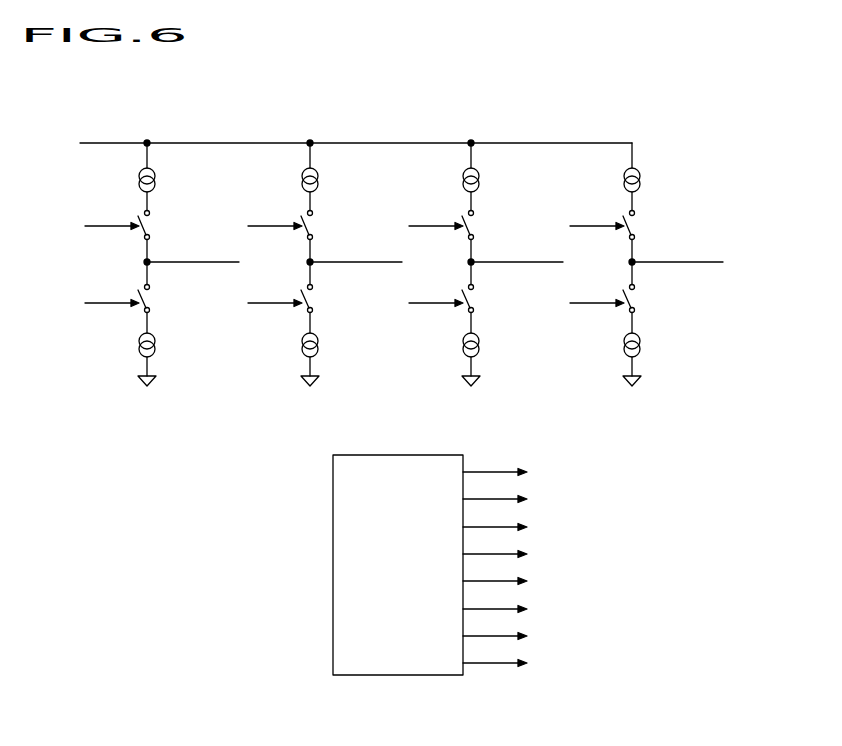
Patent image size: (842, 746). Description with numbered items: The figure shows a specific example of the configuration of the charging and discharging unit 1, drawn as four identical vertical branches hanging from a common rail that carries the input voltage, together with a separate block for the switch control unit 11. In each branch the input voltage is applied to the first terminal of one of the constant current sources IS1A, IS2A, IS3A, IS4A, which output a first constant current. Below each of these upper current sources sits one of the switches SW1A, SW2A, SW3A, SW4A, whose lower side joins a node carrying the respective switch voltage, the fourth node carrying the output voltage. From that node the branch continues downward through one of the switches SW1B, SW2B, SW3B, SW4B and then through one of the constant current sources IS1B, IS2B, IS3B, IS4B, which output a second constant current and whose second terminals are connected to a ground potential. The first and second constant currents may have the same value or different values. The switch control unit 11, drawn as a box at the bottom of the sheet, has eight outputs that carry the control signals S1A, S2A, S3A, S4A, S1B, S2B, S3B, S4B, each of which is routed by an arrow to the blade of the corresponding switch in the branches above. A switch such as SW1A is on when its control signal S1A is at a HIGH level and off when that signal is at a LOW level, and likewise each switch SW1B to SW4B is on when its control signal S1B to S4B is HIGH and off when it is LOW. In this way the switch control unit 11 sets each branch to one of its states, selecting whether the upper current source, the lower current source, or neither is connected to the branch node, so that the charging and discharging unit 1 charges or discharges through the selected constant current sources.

The charging and discharging unit 1 is at (401, 215).
The switch control unit 11 is at (397, 455).
The constant current source IS1A is at (156, 183).
The constant current source IS2A is at (319, 183).
The constant current source IS3A is at (480, 183).
The constant current source IS4A is at (641, 183).
The constant current source IS1B is at (156, 349).
The constant current source IS2B is at (319, 349).
The constant current source IS3B is at (480, 349).
The constant current source IS4B is at (641, 349).
The switch SW1A is at (154, 229).
The switch SW2A is at (317, 229).
The switch SW3A is at (478, 229).
The switch SW4A is at (639, 229).
The switch SW1B is at (154, 300).
The switch SW2B is at (317, 300).
The switch SW3B is at (478, 300).
The switch SW4B is at (639, 300).
The control signal S1A is at (112, 216).
The control signal S2A is at (275, 216).
The control signal S3A is at (436, 216).
The control signal S4A is at (597, 216).
The control signal S1B is at (112, 293).
The control signal S2B is at (275, 293).
The control signal S3B is at (436, 293).
The control signal S4B is at (597, 293).